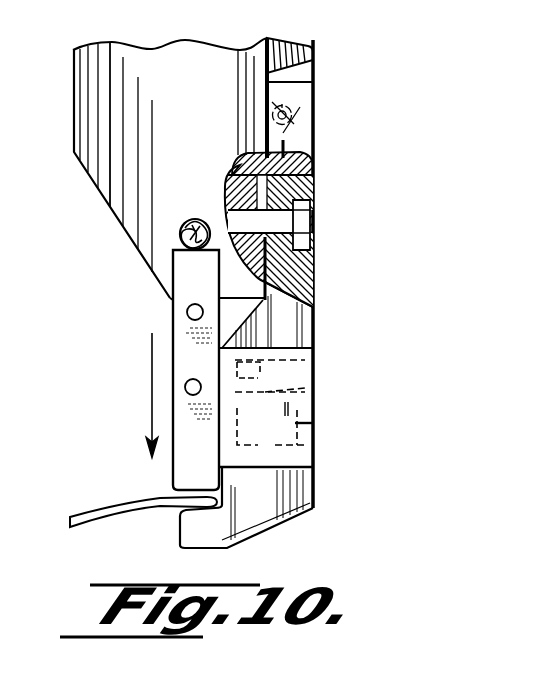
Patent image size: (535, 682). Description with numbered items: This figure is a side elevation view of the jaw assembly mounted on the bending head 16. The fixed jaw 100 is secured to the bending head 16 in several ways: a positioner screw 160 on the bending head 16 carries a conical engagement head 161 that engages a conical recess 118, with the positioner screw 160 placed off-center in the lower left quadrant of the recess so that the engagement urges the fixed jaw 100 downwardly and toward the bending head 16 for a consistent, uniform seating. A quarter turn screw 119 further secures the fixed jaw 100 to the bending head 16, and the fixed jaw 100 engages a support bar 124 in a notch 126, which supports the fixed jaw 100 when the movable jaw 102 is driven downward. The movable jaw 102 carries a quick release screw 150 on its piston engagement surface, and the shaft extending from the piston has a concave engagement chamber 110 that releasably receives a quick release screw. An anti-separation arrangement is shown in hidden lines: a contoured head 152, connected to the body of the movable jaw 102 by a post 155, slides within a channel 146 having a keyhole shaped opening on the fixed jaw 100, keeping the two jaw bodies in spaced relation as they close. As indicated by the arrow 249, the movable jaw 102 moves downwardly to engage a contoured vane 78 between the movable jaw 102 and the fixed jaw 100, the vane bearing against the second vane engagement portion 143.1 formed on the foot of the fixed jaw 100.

The bending head 16 is at (110, 97).
The conical engagement head 161 is at (303, 72).
The positioner screw 160 is at (320, 92).
The conical recess 118 is at (317, 127).
The support bar 124 is at (294, 157).
The notch 126 is at (302, 172).
The quarter turn screw 119 is at (316, 221).
The fixed jaw 100 is at (313, 318).
The concave engagement chamber 110 is at (178, 220).
The quick release screw 150 is at (178, 244).
The movable jaw 102 is at (171, 315).
The arrow 249 is at (150, 379).
The post 155 is at (270, 388).
The contoured head 152 is at (318, 398).
The channel 146 is at (313, 425).
The contoured vane 78 is at (110, 500).
The second vane engagement portion 143.1 is at (177, 510).